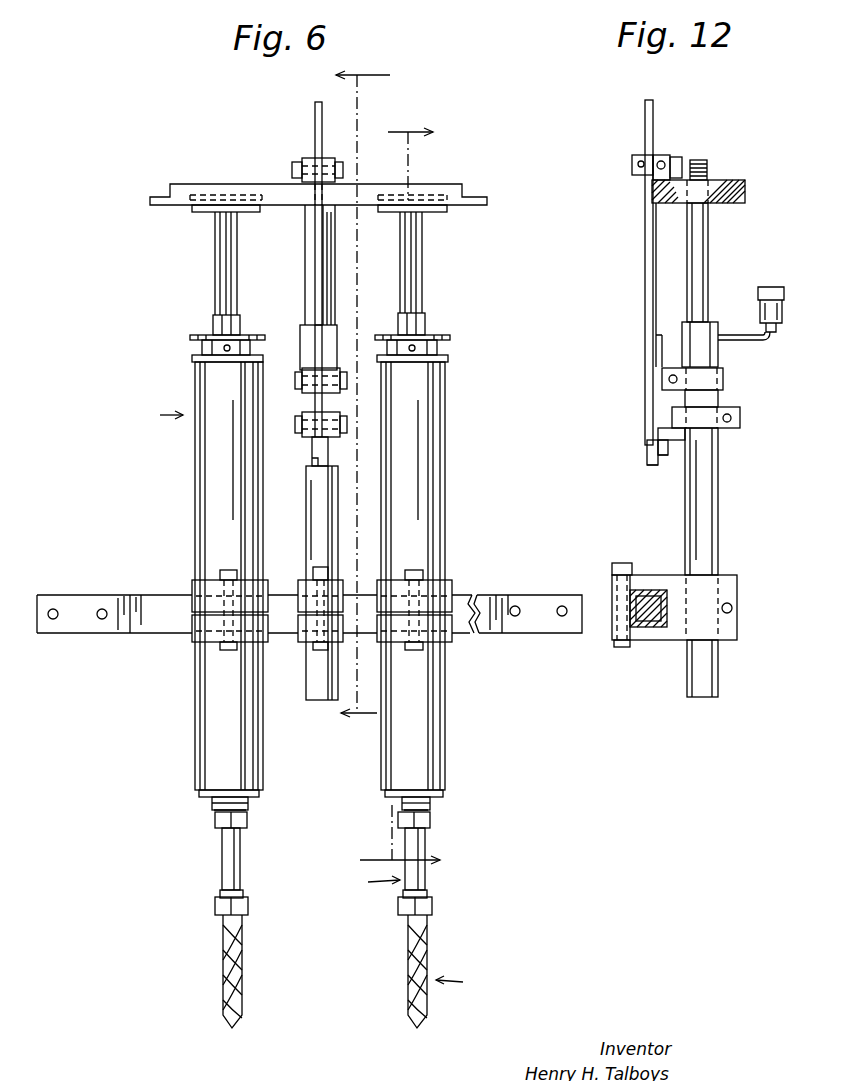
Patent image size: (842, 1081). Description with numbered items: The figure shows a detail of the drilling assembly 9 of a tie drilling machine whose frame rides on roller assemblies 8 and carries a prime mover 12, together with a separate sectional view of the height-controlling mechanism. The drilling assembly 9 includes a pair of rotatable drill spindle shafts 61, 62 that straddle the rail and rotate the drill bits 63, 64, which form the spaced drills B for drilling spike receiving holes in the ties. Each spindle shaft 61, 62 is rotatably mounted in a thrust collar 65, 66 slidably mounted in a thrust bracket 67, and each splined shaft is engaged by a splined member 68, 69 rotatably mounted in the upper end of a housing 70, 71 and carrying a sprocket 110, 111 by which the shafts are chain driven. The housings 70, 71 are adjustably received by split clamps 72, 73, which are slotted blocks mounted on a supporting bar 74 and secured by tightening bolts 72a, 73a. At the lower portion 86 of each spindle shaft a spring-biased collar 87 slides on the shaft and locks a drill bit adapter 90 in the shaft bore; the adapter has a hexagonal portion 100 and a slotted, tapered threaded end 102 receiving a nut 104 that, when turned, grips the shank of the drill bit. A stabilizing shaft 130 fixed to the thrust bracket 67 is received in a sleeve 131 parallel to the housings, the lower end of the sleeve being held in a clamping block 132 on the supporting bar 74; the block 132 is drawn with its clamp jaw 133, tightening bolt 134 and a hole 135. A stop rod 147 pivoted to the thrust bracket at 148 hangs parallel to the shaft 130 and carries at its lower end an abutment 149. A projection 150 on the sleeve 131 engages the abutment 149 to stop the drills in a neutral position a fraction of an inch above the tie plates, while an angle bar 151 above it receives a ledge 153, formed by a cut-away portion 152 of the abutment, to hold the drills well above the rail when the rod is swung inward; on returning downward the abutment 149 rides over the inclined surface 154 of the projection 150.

In FIG. 6, the roller assemblies 8 is at (386, 492).
In FIG. 6, the drilling assembly 9 is at (267, 651).
In FIG. 6, the prime mover 12 is at (348, 396).
In FIG. 6, the drills B is at (463, 986).
In FIG. 6, the drill spindle shaft 61 is at (422, 283).
In FIG. 6, the drill spindle shaft 62 is at (215, 290).
In FIG. 6, the drill bit 63 is at (418, 948).
In FIG. 6, the drill bit 64 is at (230, 953).
In FIG. 6, the thrust collar 65 is at (440, 212).
In FIG. 6, the thrust collar 66 is at (200, 212).
In FIG. 6, the thrust bracket 67 is at (452, 184).
In FIG. 12, the thrust bracket 67 is at (745, 195).
In FIG. 6, the splined member 68 is at (425, 322).
In FIG. 6, the splined member 69 is at (240, 320).
In FIG. 6, the housing 70 is at (445, 440).
In FIG. 6, the housing 71 is at (195, 482).
In FIG. 6, the split clamp 72 is at (445, 582).
In FIG. 6, the tightening bolt 72a is at (415, 578).
In FIG. 6, the split clamp 73 is at (193, 644).
In FIG. 6, the tightening bolt 73a is at (220, 575).
In FIG. 6, the supporting bar 74 is at (462, 635).
In FIG. 12, the supporting bar 74 is at (650, 627).
In FIG. 6, the lower portion of the spindle shaft 86 is at (248, 815).
In FIG. 6, the collar 87 is at (212, 800).
In FIG. 6, the drill bit adapter 90 is at (222, 860).
In FIG. 6, the hexagonal portion 100 is at (215, 825).
In FIG. 6, the tapered threads 102 is at (222, 892).
In FIG. 6, the nut 104 is at (215, 908).
In FIG. 6, the sprocket 110 is at (450, 338).
In FIG. 6, the sprocket 111 is at (190, 338).
In FIG. 6, the stabilizing shaft 130 is at (305, 240).
In FIG. 12, the stabilizing shaft 130 is at (708, 282).
In FIG. 6, the sleeve 131 is at (307, 520).
In FIG. 12, the sleeve 131 is at (718, 490).
In FIG. 6, the clamping block 132 is at (300, 644).
In FIG. 12, the clamping block 132 is at (737, 578).
In FIG. 12, the clamp jaw 133 is at (612, 630).
In FIG. 6, the clamp bolt 134 is at (313, 573).
In FIG. 12, the clamp bolt 134 is at (622, 563).
In FIG. 12, the set screw hole 135 is at (733, 608).
In FIG. 6, the stop rod 147 is at (315, 125).
In FIG. 12, the stop rod 147 is at (645, 278).
In FIG. 6, the pivot 148 is at (292, 170).
In FIG. 12, the pivot 148 is at (664, 155).
In FIG. 6, the abutment 149 is at (312, 452).
In FIG. 12, the abutment 149 is at (647, 450).
In FIG. 6, the projection 150 is at (300, 425).
In FIG. 12, the projection 150 is at (662, 432).
In FIG. 6, the angle bar 151 is at (303, 345).
In FIG. 12, the angle bar 151 is at (662, 342).
In FIG. 12, the cut-away portion 152 is at (655, 468).
In FIG. 6, the ledge 153 is at (315, 464).
In FIG. 12, the ledge 153 is at (660, 462).
In FIG. 12, the inclined surface 154 is at (662, 420).